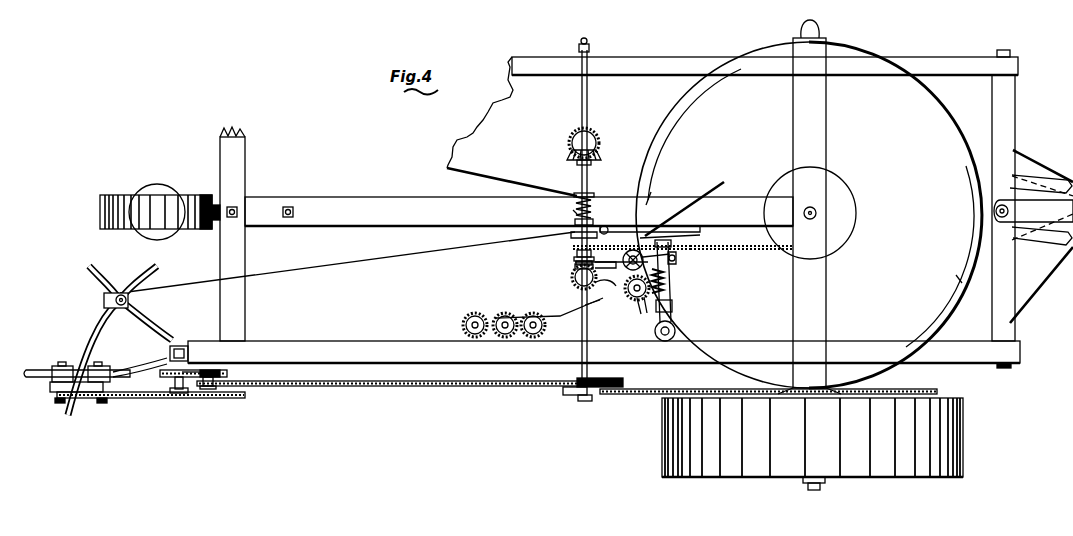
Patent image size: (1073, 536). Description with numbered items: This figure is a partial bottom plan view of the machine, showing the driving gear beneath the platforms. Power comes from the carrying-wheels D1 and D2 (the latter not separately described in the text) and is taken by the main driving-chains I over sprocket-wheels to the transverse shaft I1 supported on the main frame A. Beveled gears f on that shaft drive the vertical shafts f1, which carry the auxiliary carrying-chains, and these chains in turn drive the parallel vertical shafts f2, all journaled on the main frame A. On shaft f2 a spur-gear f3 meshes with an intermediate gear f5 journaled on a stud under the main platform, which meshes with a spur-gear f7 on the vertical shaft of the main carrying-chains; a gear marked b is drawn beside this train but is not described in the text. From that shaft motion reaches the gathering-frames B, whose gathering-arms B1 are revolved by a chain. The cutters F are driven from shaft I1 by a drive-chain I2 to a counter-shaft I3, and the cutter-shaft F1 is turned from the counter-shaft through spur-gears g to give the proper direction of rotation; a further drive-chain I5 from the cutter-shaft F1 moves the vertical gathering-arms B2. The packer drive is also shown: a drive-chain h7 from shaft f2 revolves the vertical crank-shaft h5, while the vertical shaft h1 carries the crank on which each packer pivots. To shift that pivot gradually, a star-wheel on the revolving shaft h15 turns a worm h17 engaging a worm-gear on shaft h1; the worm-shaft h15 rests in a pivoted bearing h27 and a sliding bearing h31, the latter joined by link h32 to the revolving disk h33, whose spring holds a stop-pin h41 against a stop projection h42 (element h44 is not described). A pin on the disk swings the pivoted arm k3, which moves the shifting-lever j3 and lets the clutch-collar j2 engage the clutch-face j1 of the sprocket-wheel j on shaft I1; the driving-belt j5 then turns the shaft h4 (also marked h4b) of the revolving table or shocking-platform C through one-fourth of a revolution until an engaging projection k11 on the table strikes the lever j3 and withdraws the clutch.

The main frame A is at (645, 58).
The gathering-frames B is at (347, 265).
The gathering-arms B1 is at (82, 275).
The vertical gathering-arms B2 is at (48, 370).
The revolving table or shocking-platform C is at (809, 215).
The carrying-wheel D1 is at (812, 444).
The upper drum D2 is at (100, 212).
The cutters F is at (181, 344).
The cutter-shaft F1 is at (178, 398).
The main driving-chains I is at (618, 390).
The transverse shaft I1 is at (590, 110).
The drive-chain I2 is at (382, 382).
The counter-shaft I3 is at (212, 388).
The drive-chain I5 is at (107, 400).
The gear train b is at (470, 325).
The beveled gears f is at (600, 147).
The vertical shafts f1 is at (574, 268).
The vertical shafts f2 is at (570, 281).
The spur-gear f3 is at (532, 312).
The intermediate gear f5 is at (502, 312).
The spur-gear f7 is at (465, 318).
The spur-gears g is at (186, 372).
The vertical crank-shaft h1 is at (630, 296).
The shaft h4 is at (816, 212).
The axle bracket h4b is at (660, 340).
The vertical crank-shaft h5 is at (676, 331).
The drive-chain h7 is at (602, 338).
The worm-shaft h15 is at (674, 270).
The worm h17 is at (672, 308).
The pivoted bearing h27 is at (674, 314).
The sliding bearing h31 is at (690, 250).
The link h32 is at (670, 288).
The revolving disk h33 is at (635, 257).
The stop-pin h41 is at (610, 282).
The stop projection h42 is at (580, 300).
The pawl carrier h44 is at (610, 267).
The sprocket-wheel j is at (575, 229).
The clutch-face j1 is at (604, 226).
The sliding clutch-collar j2 is at (573, 212).
The shifting-lever j3 is at (620, 226).
The driving-belt j5 is at (741, 255).
The pivoted arm k3 is at (661, 189).
The engaging projection k11 is at (955, 277).